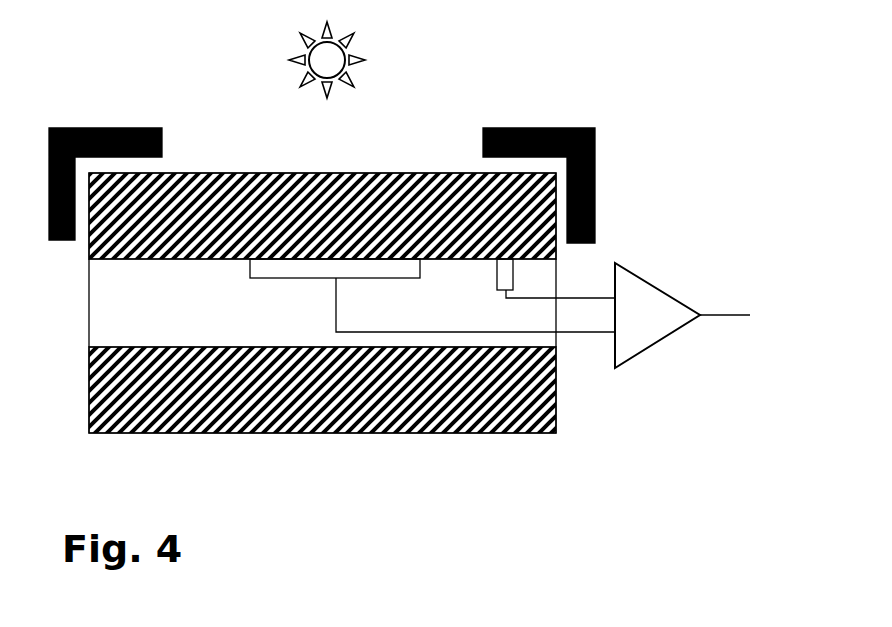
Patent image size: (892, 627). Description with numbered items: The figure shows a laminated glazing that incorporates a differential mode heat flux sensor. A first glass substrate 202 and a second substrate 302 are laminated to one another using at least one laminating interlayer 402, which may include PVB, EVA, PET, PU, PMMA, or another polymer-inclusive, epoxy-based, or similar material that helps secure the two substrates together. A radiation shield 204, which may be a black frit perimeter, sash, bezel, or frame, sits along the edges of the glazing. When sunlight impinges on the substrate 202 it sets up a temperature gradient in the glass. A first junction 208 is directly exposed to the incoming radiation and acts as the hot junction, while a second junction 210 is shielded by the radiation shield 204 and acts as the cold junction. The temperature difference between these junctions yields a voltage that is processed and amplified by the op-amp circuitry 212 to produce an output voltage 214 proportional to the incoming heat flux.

The glass substrate 202 is at (322, 173).
The radiation shield 204 is at (597, 143).
The first junction 208 is at (275, 278).
The second junction 210 is at (497, 273).
The op-amp circuitry 212 is at (640, 275).
The voltage 214 is at (733, 315).
The second substrate 302 is at (323, 433).
The laminating interlayer 402 is at (89, 305).